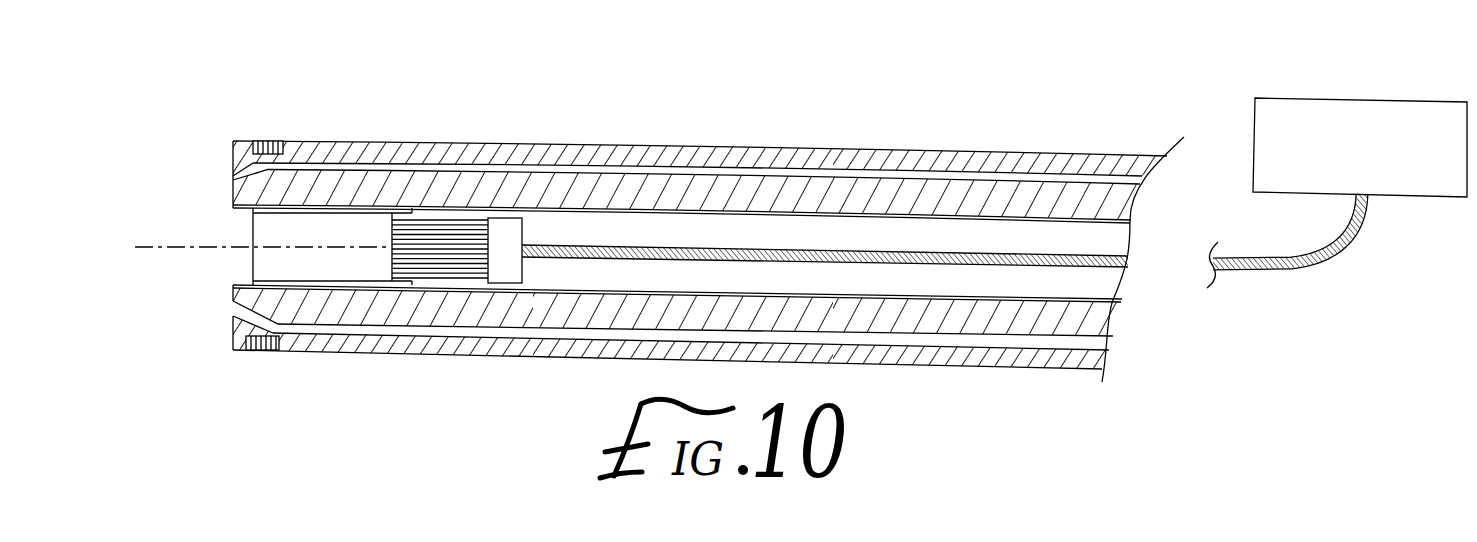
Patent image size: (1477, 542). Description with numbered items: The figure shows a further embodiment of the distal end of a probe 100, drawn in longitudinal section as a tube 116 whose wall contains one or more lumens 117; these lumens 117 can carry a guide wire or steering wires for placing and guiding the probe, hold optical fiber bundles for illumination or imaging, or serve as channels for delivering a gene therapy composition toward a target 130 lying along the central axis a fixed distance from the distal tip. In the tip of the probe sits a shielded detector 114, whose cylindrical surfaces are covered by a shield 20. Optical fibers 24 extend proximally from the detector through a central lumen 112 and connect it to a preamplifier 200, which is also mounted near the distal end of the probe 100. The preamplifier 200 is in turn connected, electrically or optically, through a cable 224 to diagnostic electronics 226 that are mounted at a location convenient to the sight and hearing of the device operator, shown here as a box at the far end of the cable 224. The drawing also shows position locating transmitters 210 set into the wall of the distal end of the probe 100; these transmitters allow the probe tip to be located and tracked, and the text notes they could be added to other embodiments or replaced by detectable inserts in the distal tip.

The shield 20 is at (362, 213).
The optical fibers 24 is at (447, 222).
The probe 100 is at (795, 126).
The central lumen 112 is at (518, 253).
The shielded detector 114 is at (265, 262).
The tube 116 is at (1093, 318).
The lumens 117 is at (990, 180).
The target 130 is at (173, 245).
The preamplifier 200 is at (508, 262).
The position locating transmitters 210 is at (265, 141).
The cable 224 is at (1048, 253).
The diagnostic electronics 226 is at (1348, 98).